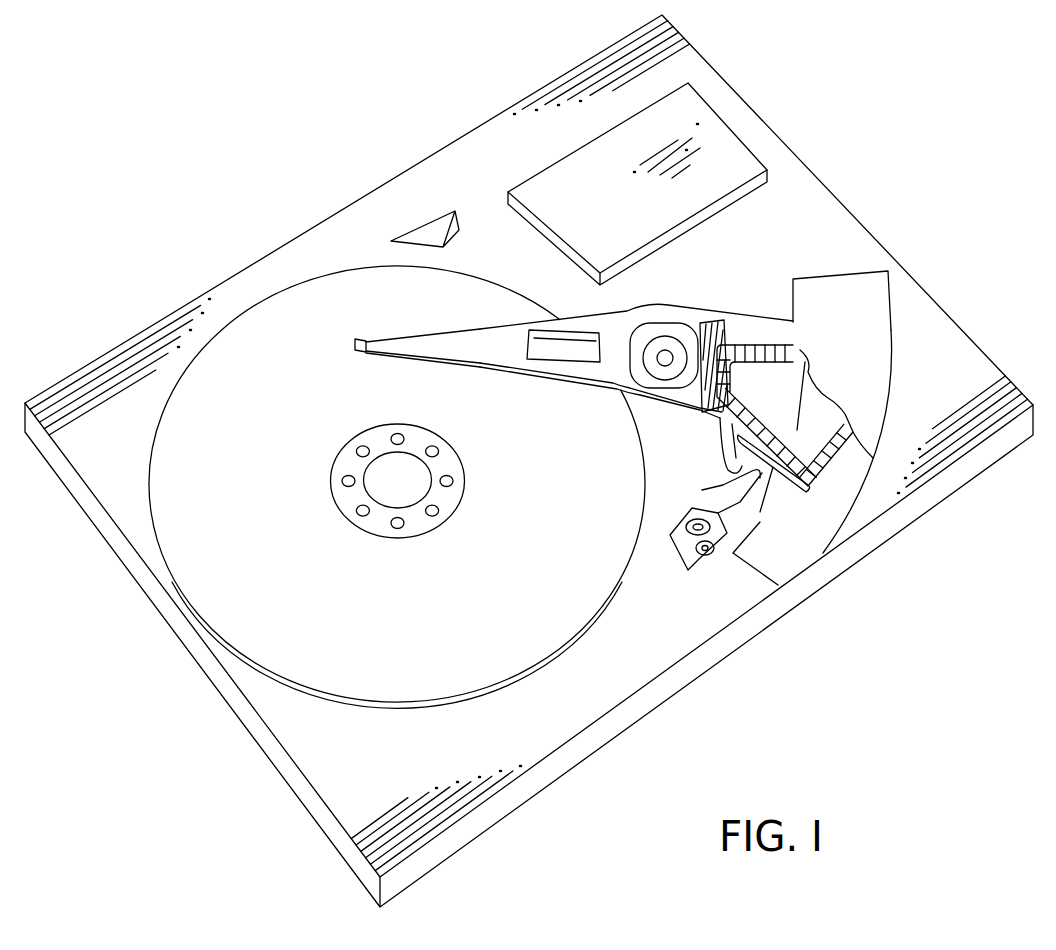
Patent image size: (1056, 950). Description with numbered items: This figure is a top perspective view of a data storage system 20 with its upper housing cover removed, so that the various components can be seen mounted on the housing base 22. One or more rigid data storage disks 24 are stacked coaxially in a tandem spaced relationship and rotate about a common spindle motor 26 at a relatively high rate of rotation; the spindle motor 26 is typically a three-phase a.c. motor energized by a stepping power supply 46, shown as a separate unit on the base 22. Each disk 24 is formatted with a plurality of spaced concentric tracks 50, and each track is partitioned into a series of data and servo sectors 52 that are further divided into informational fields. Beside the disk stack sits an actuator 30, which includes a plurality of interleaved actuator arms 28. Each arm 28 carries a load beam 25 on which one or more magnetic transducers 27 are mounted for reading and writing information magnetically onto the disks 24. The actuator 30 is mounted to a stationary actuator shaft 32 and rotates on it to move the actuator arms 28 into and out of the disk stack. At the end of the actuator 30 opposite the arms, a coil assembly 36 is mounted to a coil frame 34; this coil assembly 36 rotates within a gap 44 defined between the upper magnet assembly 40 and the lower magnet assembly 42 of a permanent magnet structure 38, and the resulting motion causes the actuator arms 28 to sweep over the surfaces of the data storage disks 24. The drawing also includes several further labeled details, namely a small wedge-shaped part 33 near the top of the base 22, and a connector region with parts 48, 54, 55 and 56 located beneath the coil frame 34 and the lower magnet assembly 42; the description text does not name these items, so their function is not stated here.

The data storage system 20 is at (843, 142).
The housing base 22 is at (699, 673).
The rigid data storage disks 24 is at (182, 473).
The load beam 25 is at (378, 354).
The spindle motor 26 is at (427, 531).
The magnetic transducers 27 is at (355, 341).
The actuator arms 28 is at (502, 350).
The actuator 30 is at (682, 406).
The stationary actuator shaft 32 is at (665, 350).
The crash stop 33 is at (440, 213).
The coil frame 34 is at (719, 322).
The coil assembly 36 is at (742, 365).
The permanent magnet structure 38 is at (892, 301).
The upper magnet assembly 40 is at (884, 355).
The lower magnet assembly 42 is at (748, 550).
The gap 44 is at (857, 448).
The stepping power supply 46 is at (592, 223).
The flex cable 48 is at (692, 508).
The concentric tracks 50 is at (688, 564).
The data and servo sectors 52 is at (730, 463).
The flex cable segment 54 is at (760, 512).
The flex cable segment 55 is at (748, 537).
The mounting holes 56 is at (697, 520).